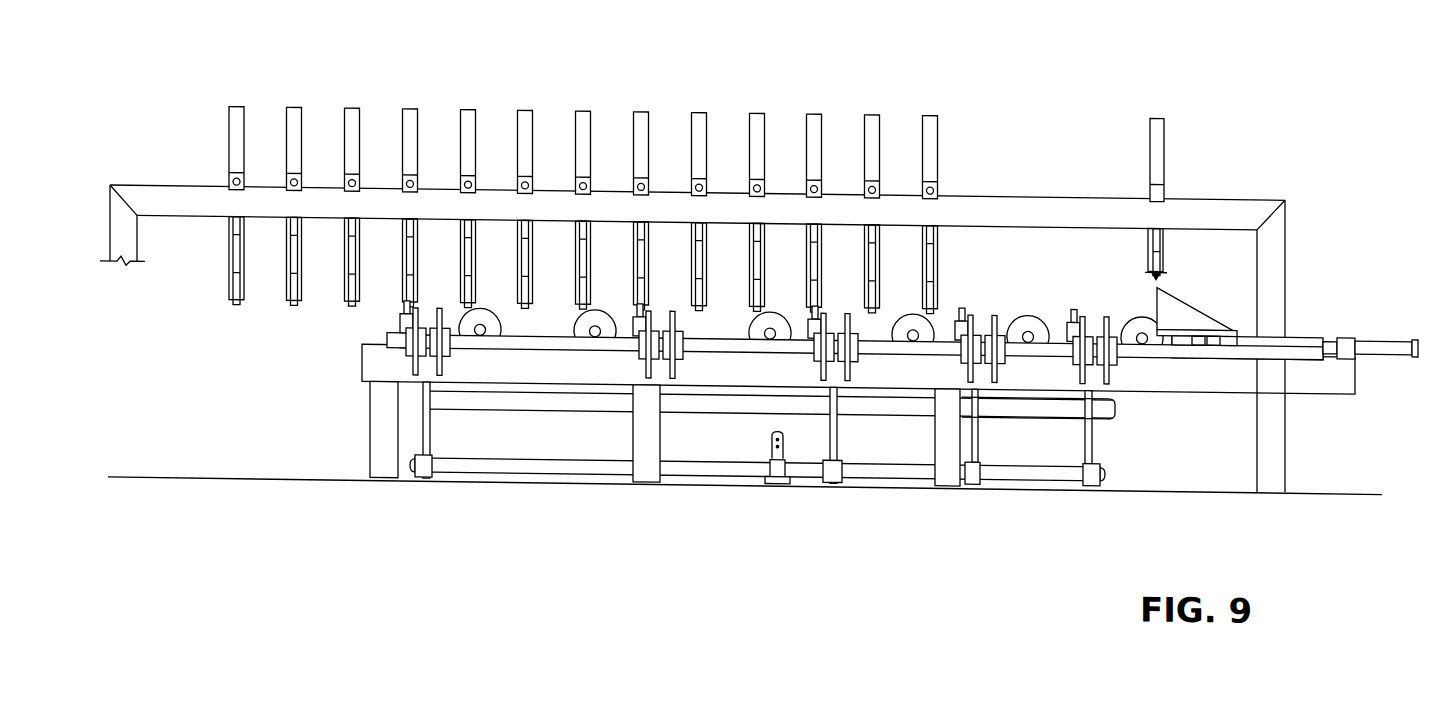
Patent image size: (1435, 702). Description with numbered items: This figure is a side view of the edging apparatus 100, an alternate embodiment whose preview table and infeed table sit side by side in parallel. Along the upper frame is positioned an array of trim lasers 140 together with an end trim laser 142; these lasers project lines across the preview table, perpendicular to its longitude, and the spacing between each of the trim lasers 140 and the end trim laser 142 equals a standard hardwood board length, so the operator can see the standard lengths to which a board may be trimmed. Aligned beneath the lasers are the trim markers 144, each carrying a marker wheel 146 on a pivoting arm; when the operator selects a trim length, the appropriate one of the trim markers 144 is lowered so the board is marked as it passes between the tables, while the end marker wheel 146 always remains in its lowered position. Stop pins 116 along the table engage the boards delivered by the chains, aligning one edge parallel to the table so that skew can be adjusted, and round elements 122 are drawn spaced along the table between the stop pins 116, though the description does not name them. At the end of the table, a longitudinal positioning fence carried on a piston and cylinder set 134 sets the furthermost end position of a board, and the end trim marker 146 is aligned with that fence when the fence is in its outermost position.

The edging apparatus 100 is at (224, 354).
The stop pins 116 is at (437, 297).
The pulleys 122 is at (502, 317).
The piston and cylinder set 134 is at (1412, 323).
The trim lasers 140 is at (298, 103).
The end trim laser 142 is at (1165, 132).
The trim markers 144 is at (286, 281).
The marker wheels 146 is at (1163, 241).